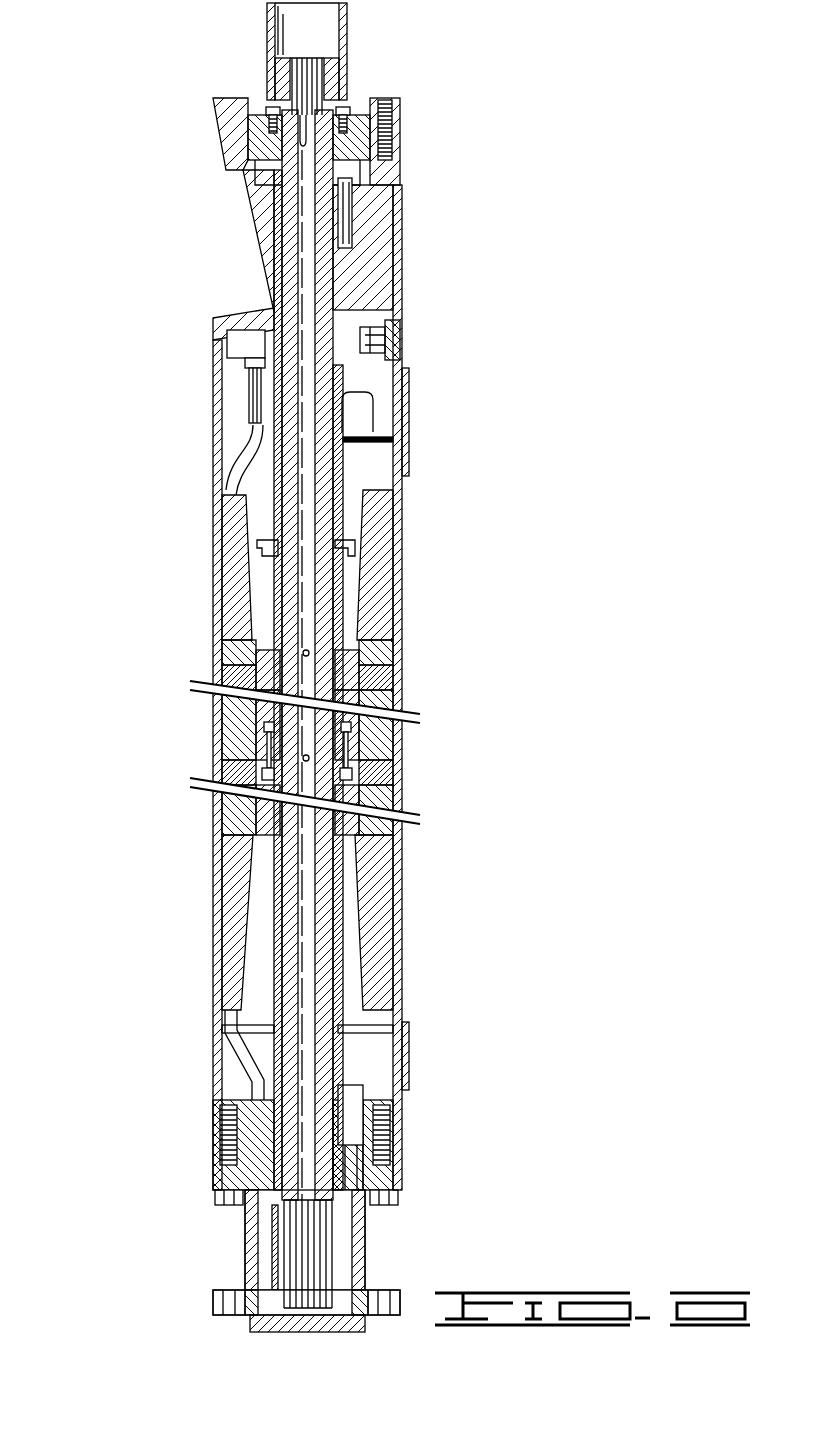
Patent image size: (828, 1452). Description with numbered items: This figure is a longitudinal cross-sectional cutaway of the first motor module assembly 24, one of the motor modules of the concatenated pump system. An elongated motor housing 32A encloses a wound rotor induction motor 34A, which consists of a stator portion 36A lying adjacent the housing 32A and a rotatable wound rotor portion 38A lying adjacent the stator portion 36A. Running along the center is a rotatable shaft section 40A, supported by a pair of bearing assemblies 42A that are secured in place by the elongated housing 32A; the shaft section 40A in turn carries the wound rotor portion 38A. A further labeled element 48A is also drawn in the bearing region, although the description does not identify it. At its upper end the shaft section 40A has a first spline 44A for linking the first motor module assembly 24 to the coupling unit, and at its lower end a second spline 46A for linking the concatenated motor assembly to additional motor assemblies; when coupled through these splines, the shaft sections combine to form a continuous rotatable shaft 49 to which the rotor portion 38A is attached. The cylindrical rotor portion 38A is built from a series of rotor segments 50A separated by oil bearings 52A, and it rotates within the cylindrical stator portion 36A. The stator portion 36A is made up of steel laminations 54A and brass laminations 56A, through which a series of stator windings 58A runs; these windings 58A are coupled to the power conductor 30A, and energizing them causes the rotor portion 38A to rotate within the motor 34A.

The first motor module assembly 24 is at (193, 72).
The first spline 44A is at (340, 62).
The bearing assemblies 42A is at (285, 192).
The rotatable shaft section 40A is at (325, 290).
The power conductor 30A is at (228, 470).
The stator portion 36A is at (230, 568).
The wound rotor induction motor 34A is at (398, 557).
The stator windings 58A is at (235, 652).
The bearing 48A is at (375, 658).
The rotor segments 50A is at (350, 697).
The brass laminations 56A is at (235, 760).
The oil bearings 52A is at (365, 762).
The wound rotor portion 38A is at (225, 895).
The elongated motor housing 32A is at (398, 952).
The steel laminations 54A is at (260, 718).
The second spline 46A is at (300, 1258).
The continuous rotatable shaft 49 is at (295, 1320).